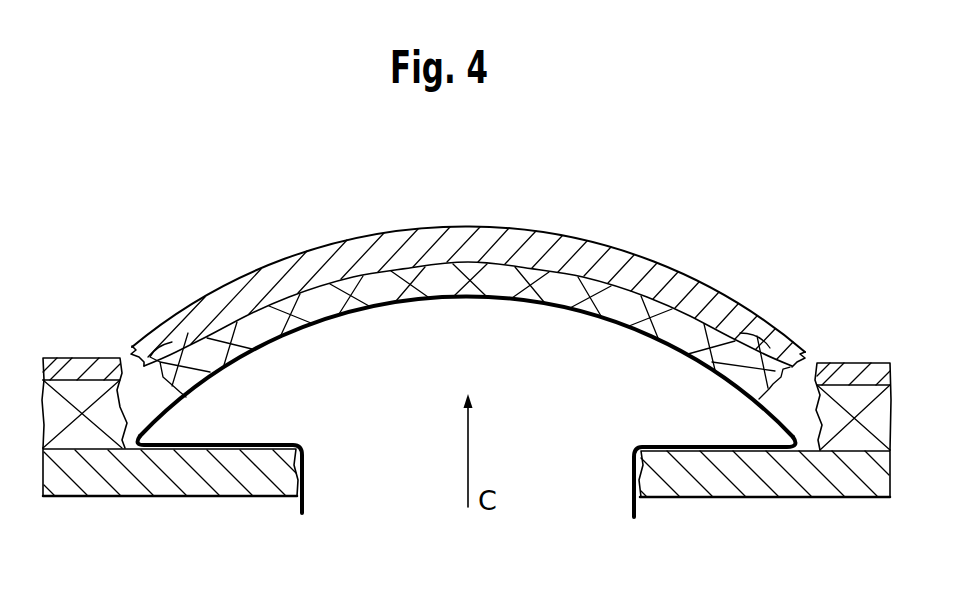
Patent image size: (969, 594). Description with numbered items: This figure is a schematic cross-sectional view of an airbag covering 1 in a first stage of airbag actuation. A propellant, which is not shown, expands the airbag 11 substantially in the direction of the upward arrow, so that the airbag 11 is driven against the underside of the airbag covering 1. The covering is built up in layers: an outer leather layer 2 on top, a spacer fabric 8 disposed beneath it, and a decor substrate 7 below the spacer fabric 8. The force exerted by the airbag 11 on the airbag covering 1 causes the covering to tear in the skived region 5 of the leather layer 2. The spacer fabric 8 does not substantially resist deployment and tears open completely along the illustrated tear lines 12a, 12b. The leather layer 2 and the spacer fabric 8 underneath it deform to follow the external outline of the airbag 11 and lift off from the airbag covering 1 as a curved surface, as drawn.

The airbag covering 1 is at (870, 300).
The leather layer 2 is at (603, 258).
The skived region 5 is at (768, 353).
The decor substrate 7 is at (77, 473).
The spacer fabric 8 is at (360, 290).
The airbag 11 is at (300, 332).
The tear line 12a is at (137, 438).
The tear line 12b is at (797, 438).